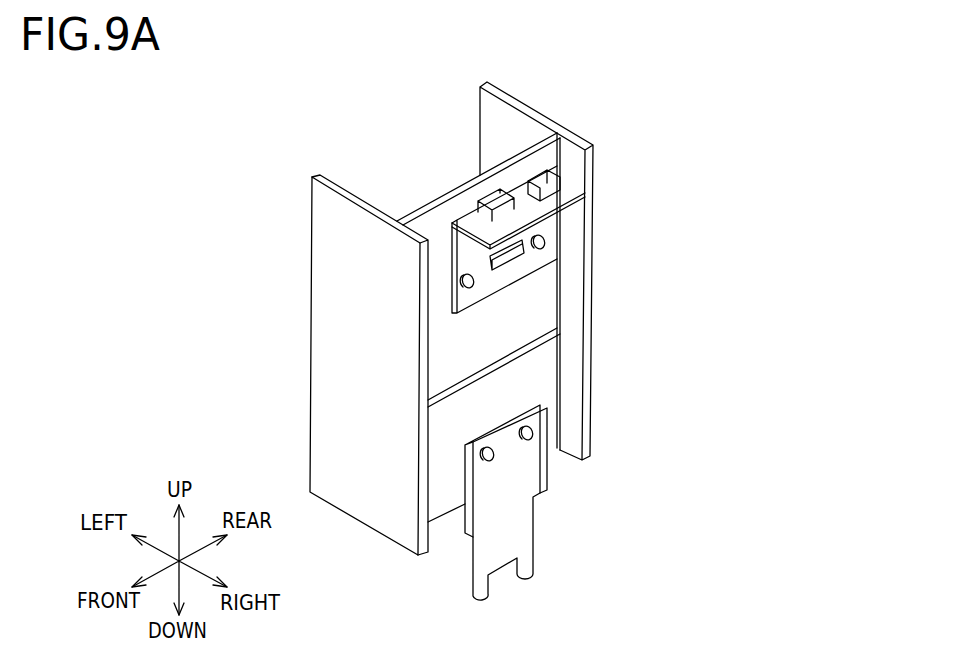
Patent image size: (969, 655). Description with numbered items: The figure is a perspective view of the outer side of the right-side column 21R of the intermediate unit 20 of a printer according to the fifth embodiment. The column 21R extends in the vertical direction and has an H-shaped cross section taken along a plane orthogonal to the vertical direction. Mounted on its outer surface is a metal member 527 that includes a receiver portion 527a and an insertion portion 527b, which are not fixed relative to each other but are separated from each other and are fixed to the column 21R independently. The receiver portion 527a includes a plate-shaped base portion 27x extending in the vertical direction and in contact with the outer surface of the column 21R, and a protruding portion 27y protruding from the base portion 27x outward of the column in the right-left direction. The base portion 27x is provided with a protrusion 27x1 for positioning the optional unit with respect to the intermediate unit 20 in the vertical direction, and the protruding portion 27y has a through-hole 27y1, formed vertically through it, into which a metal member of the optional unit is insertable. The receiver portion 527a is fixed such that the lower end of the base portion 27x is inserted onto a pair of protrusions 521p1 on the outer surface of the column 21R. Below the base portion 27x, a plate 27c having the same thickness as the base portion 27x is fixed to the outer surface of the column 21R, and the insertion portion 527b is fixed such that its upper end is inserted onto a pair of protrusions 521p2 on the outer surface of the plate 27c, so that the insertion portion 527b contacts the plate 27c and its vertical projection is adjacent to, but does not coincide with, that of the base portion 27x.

The intermediate unit 20 is at (772, 192).
The right-side column 21R is at (604, 320).
The plate 27c is at (548, 377).
The base portion 27x is at (545, 255).
The protrusion 27x1 is at (518, 267).
The protruding portion 27y is at (562, 190).
The through-hole 27y1 is at (560, 169).
The protrusions 521p1 is at (452, 283).
The protrusions 521p2 is at (533, 429).
The metal member 527 is at (182, 266).
The receiver portion 527a is at (452, 284).
The insertion portion 527b is at (470, 467).